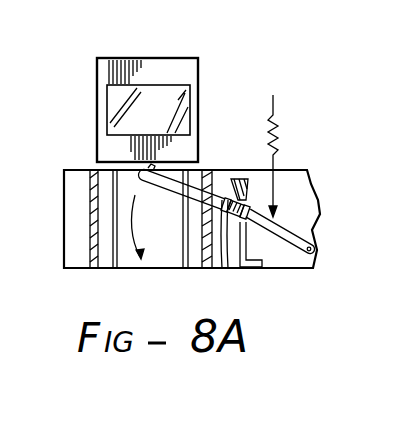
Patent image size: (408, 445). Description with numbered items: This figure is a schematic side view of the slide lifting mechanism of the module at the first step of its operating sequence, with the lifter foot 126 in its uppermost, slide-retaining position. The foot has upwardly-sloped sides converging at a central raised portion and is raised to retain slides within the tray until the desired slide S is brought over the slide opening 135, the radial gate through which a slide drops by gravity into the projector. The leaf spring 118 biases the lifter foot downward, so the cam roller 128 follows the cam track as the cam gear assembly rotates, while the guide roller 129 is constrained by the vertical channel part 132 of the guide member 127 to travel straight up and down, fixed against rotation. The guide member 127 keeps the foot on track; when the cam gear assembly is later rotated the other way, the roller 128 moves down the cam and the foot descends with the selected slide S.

The spring 118 is at (279, 146).
The lifter foot 126 is at (151, 165).
The guide member 127 is at (240, 158).
The roller 128 is at (258, 222).
The roller 129 is at (205, 206).
The vertical channel part 132 is at (214, 268).
The slide opening 135 is at (128, 257).
The slide S is at (97, 93).